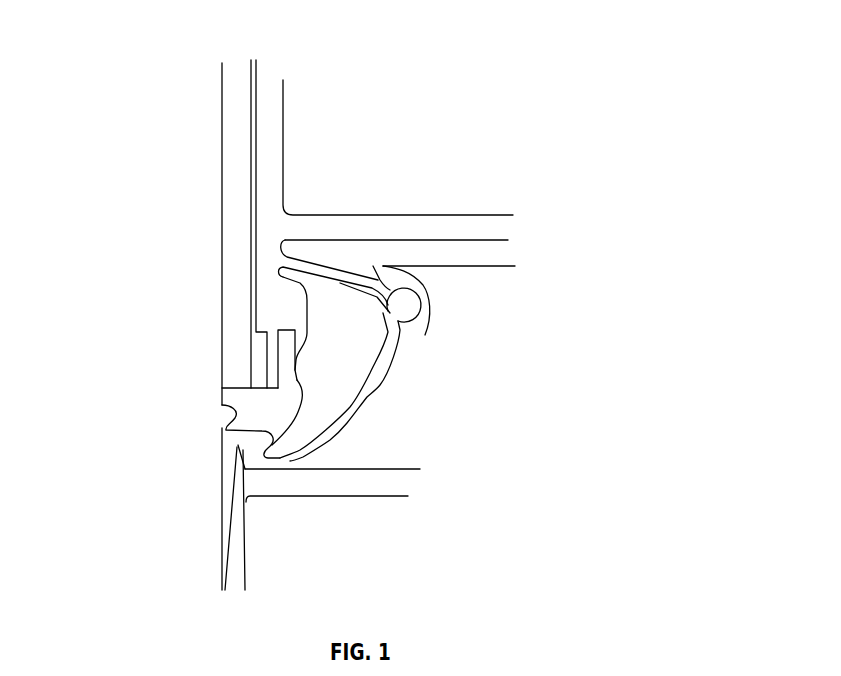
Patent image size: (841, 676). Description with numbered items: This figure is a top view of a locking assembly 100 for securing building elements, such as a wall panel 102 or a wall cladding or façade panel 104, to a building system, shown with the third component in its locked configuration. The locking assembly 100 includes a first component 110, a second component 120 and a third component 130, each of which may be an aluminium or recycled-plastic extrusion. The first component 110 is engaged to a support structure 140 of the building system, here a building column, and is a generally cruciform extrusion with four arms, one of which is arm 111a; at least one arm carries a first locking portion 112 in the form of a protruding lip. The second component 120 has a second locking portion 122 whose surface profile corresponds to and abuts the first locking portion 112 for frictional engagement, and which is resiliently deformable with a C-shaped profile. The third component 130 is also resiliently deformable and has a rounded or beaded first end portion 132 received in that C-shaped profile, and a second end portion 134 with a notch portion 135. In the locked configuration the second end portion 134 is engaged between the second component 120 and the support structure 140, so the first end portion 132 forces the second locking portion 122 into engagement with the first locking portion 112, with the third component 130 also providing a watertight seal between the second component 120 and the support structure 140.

The locking assembly 100 is at (610, 150).
The wall panel 102 is at (310, 150).
The wall cladding or façade panel 104 is at (233, 300).
The first component 110 is at (487, 257).
The arm 111a is at (349, 254).
The first locking portion 112 is at (373, 266).
The second component 120 is at (487, 227).
The second locking portion 122 is at (373, 298).
The third component 130 is at (373, 390).
The first end portion 132 is at (405, 307).
The second end portion 134 is at (221, 440).
The notch portion 135 is at (240, 470).
The support structure 140 is at (387, 487).